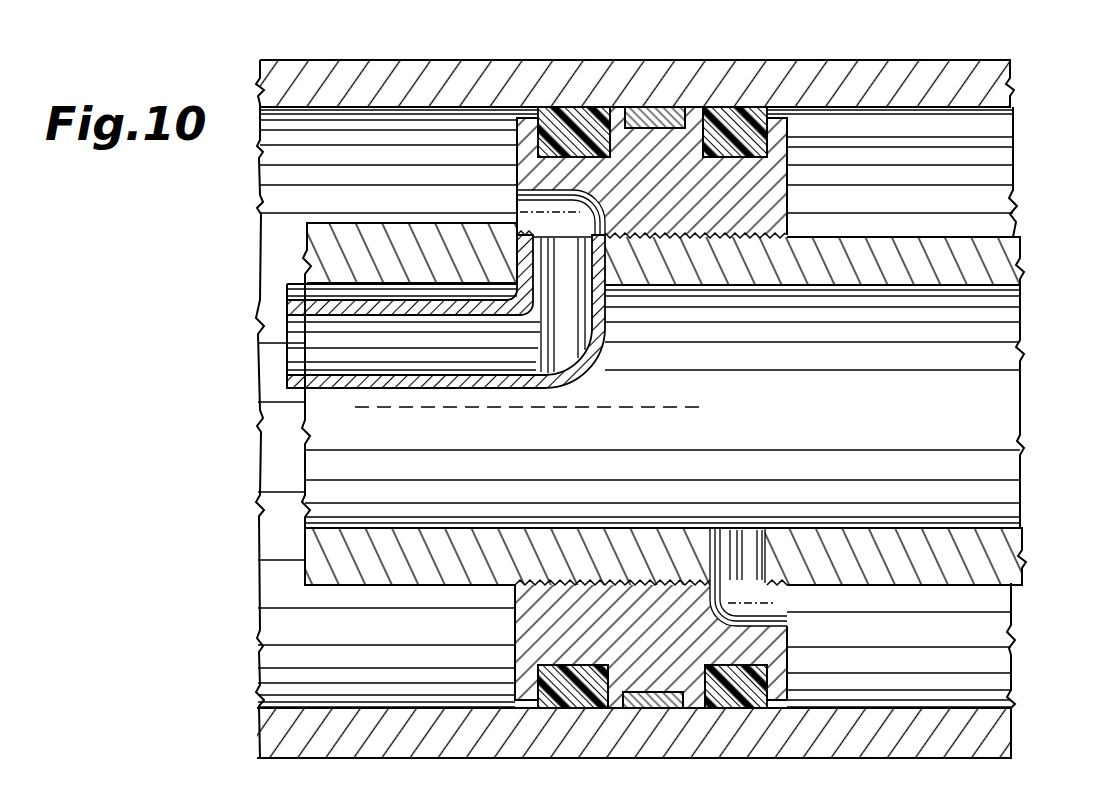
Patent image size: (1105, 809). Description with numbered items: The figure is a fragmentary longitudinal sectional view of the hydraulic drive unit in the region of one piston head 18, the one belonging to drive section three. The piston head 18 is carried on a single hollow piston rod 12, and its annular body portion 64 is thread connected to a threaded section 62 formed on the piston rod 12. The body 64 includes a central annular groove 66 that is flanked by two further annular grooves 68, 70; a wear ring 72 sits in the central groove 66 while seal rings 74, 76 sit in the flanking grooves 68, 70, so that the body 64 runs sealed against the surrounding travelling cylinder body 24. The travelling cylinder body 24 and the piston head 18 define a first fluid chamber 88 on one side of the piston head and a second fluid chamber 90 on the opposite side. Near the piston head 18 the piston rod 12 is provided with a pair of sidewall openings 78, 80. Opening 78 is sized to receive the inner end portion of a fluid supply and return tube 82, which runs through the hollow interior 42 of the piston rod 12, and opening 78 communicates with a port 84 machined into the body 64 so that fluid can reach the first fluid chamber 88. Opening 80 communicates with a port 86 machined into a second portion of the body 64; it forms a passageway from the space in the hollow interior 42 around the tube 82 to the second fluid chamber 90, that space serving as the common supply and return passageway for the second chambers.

The piston rod 12 is at (925, 235).
The piston head 18 is at (505, 636).
The travelling cylinder body 24 is at (490, 58).
The hollow interior 42 is at (1000, 356).
The threaded section 62 is at (772, 217).
The annular body portion 64 is at (768, 190).
The central annular groove 66 is at (661, 692).
The annular groove 68 is at (555, 693).
The annular groove 70 is at (745, 693).
The wear ring 72 is at (668, 110).
The seal ring 74 is at (583, 127).
The seal ring 76 is at (745, 118).
The sidewall opening 78 is at (605, 258).
The sidewall opening 80 is at (752, 537).
The fluid supply and return tube 82 is at (414, 390).
The port 84 is at (517, 208).
The port 86 is at (777, 607).
The first fluid chamber 88 is at (360, 145).
The second fluid chamber 90 is at (1000, 666).